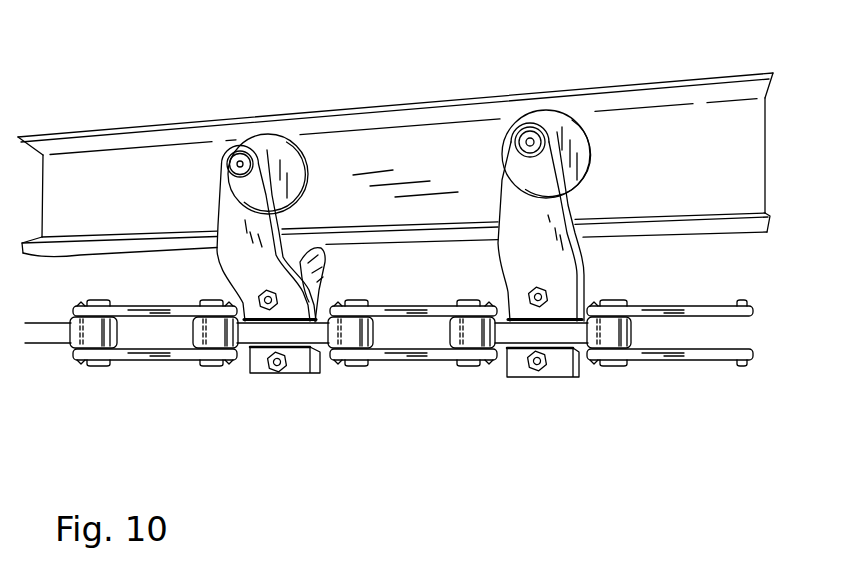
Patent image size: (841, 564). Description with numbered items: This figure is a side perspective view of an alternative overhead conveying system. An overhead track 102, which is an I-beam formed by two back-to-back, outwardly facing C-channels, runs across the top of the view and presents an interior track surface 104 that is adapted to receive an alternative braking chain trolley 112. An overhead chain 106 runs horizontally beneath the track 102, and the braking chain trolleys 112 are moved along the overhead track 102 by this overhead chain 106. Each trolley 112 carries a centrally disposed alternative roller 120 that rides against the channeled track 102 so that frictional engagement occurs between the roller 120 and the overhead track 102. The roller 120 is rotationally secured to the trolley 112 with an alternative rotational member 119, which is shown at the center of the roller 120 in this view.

The overhead track 102 is at (766, 143).
The interior track surface 104 is at (737, 165).
The overhead chain 106 is at (48, 334).
The braking chain trolley 112 is at (585, 398).
The rotational member 119 is at (534, 138).
The roller 120 is at (258, 134).